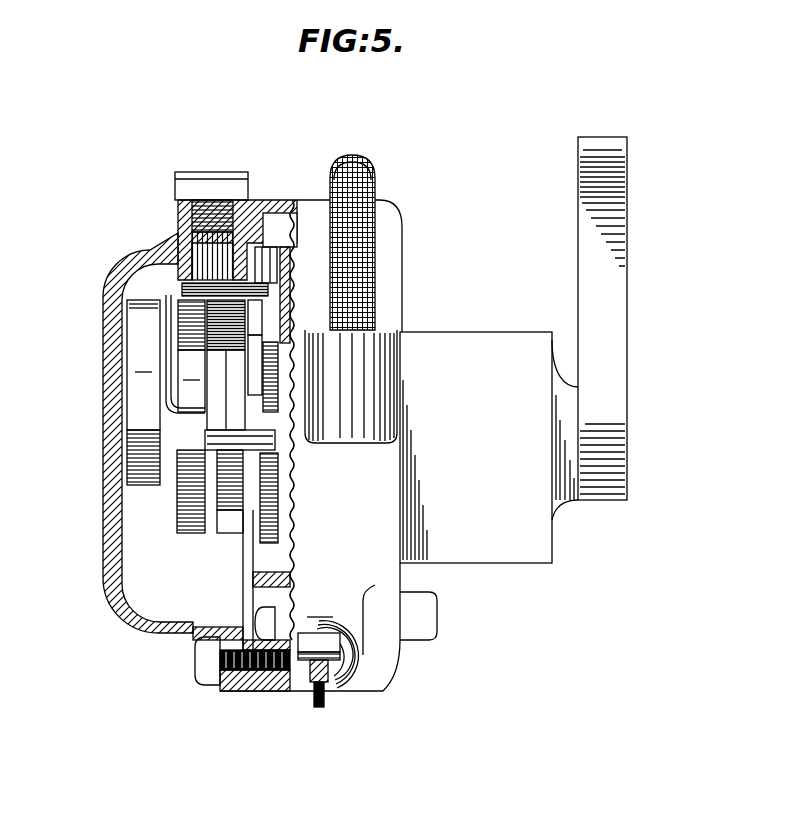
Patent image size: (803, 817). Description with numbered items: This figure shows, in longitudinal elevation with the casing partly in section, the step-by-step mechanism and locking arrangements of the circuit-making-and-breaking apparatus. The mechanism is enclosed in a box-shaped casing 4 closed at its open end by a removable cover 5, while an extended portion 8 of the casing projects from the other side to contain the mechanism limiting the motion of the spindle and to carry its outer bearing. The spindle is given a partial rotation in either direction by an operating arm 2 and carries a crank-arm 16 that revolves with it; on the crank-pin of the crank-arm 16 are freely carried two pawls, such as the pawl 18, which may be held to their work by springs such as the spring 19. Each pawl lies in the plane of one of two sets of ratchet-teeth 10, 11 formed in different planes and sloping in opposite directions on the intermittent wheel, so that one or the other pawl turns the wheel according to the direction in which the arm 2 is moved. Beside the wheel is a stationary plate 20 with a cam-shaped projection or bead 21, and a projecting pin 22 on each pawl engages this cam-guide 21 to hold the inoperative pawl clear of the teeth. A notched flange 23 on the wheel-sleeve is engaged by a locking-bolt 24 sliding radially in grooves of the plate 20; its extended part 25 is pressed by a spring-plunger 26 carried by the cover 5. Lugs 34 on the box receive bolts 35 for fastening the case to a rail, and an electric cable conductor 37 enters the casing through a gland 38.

The arm 2 is at (590, 285).
The casing 4 is at (367, 563).
The cover 5 is at (104, 352).
The extended portion of the casing 8 is at (505, 548).
The ratchet-teeth 10 is at (182, 488).
The ratchet-teeth 11 is at (152, 454).
The crank-arm 16 is at (143, 399).
The pawl 18 is at (191, 398).
The spring 19 is at (164, 368).
The stationary plate 20 is at (290, 274).
The cam-shaped projection or bead 21 is at (256, 581).
The projecting pin 22 is at (265, 441).
The flange 23 is at (270, 486).
The locking-bolt 24 is at (272, 323).
The extended part 25 is at (190, 287).
The spring-plunger 26 is at (204, 246).
The lug 34 is at (355, 443).
The bolt 35 is at (376, 187).
The electric cable conductor 37 is at (303, 694).
The gland 38 is at (362, 637).